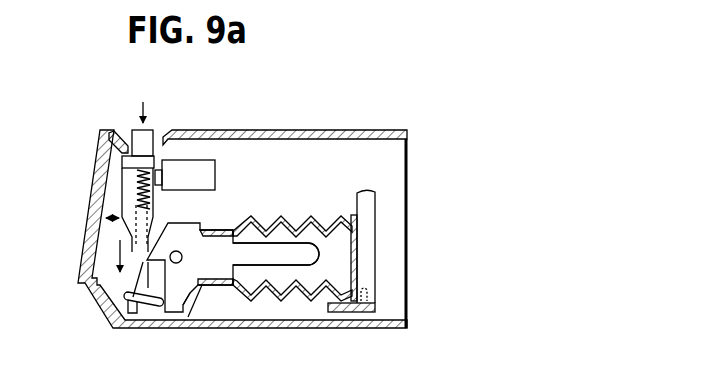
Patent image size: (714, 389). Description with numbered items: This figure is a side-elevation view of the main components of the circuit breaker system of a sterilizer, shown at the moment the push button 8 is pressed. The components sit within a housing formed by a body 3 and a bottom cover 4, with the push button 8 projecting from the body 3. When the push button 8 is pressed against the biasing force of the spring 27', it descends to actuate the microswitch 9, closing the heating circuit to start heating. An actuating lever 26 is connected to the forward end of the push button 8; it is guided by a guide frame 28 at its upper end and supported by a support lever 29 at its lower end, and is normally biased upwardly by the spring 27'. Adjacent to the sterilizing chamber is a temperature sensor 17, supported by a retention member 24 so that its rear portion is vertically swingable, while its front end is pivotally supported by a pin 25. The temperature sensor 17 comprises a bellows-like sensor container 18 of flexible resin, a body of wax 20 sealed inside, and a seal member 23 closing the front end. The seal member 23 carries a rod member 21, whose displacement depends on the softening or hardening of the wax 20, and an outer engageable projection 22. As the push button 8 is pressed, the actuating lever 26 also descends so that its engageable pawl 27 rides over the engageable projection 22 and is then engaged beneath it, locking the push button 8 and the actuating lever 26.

The body 3 is at (292, 130).
The bottom cover 4 is at (335, 328).
The push button 8 is at (150, 128).
The microswitch 9 is at (206, 160).
The temperature sensor 17 is at (262, 299).
The sensor container 18 is at (293, 231).
The wax 20 is at (334, 236).
The rod member 21 is at (265, 252).
The engageable projection 22 is at (183, 282).
The seal member 23 is at (203, 287).
The retention member 24 is at (377, 260).
The pin 25 is at (178, 263).
The actuating lever 26 is at (120, 203).
The engageable pawl 27 is at (94, 232).
The spring 27' is at (183, 198).
The guide frame 28 is at (110, 164).
The support lever 29 is at (124, 300).